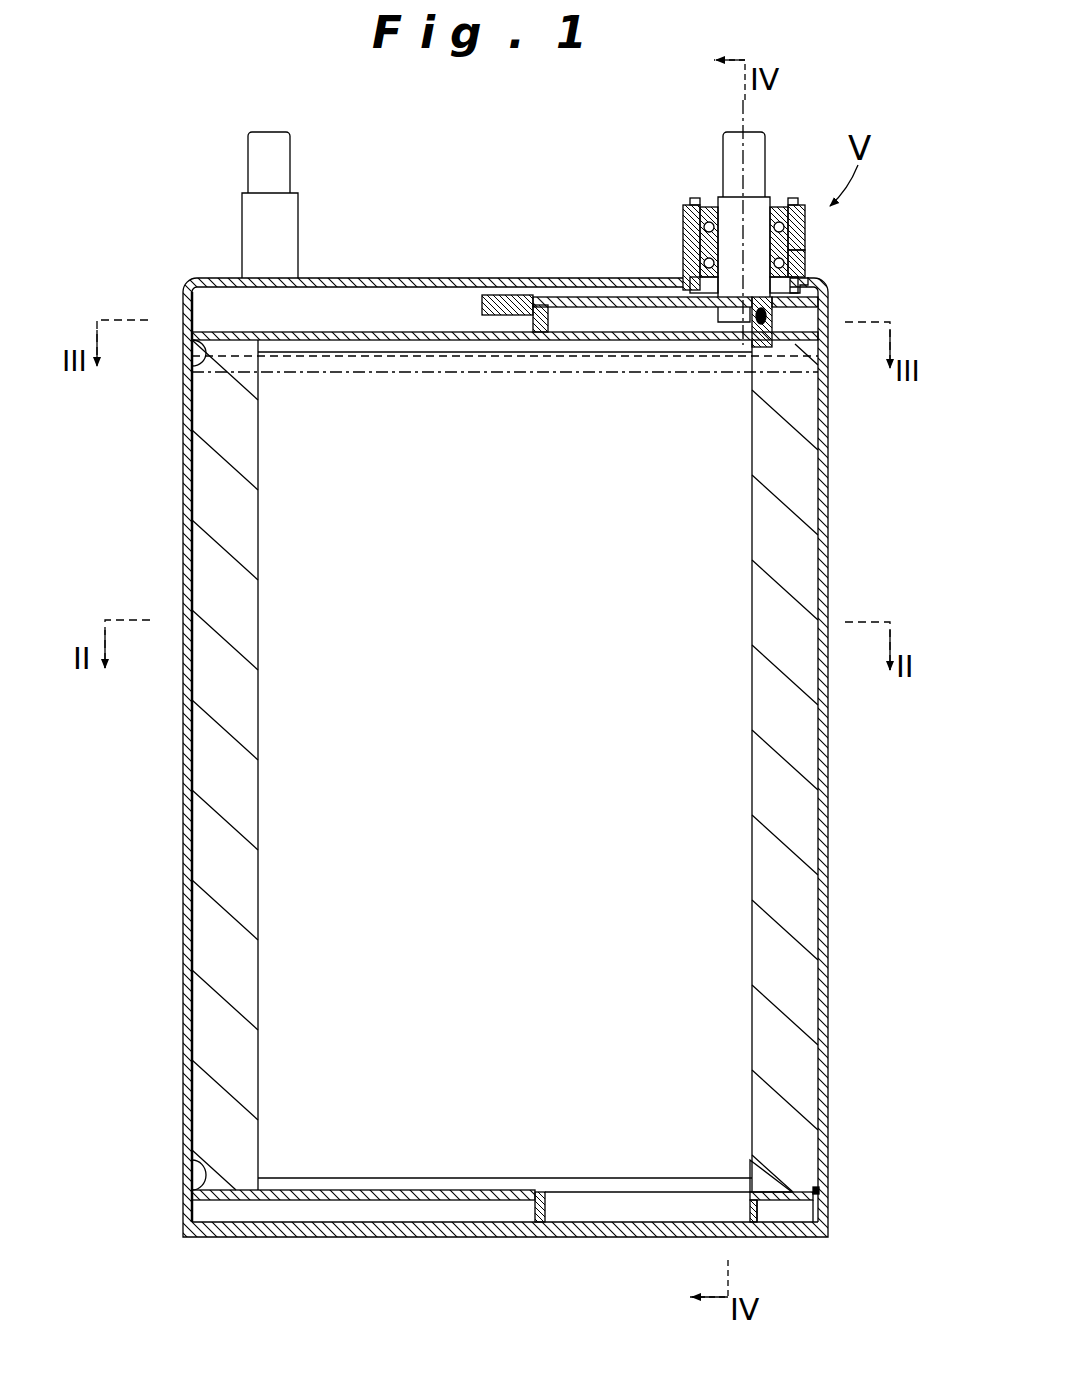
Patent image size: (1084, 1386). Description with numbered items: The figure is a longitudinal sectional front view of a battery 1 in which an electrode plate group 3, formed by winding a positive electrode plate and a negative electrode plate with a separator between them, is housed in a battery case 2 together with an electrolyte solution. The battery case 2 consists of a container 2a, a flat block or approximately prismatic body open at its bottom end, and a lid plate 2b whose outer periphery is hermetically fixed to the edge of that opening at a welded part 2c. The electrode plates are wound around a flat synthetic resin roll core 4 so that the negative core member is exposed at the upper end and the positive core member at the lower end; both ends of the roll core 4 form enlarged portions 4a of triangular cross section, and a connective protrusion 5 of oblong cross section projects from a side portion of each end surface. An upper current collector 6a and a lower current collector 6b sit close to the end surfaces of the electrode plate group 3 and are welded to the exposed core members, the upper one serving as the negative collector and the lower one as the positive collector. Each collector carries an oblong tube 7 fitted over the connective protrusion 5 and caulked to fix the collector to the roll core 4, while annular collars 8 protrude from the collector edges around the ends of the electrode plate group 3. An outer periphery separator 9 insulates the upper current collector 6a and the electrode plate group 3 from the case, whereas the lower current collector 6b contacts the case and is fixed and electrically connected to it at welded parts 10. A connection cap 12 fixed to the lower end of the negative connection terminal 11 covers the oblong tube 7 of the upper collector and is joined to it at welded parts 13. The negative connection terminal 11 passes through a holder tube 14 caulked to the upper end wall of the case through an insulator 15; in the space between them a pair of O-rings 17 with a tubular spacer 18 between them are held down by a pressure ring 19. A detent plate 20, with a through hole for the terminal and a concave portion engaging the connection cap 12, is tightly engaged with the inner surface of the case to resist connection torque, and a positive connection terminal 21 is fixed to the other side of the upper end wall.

The battery 1 is at (150, 266).
The battery case 2 is at (190, 540).
The container 2a is at (190, 566).
The lid plate 2b is at (437, 1230).
The welded part 2c is at (190, 1226).
The electrode plate group 3 is at (225, 715).
The roll core 4 is at (507, 736).
The enlarged portion 4a is at (545, 355).
The connective protrusion 5 is at (640, 322).
The upper current collector 6a is at (402, 332).
The lower current collector 6b is at (370, 1196).
The oblong tube 7 is at (543, 345).
The annular collar 8 is at (198, 350).
The outer periphery separator 9 is at (190, 905).
The welded part 10 is at (820, 1192).
The negative connection terminal 11 is at (745, 232).
The connection cap 12 is at (705, 310).
The welded part 13 is at (756, 324).
The holder tube 14 is at (806, 250).
The insulator 15 is at (810, 278).
The O-ring 17 is at (690, 252).
The tubular spacer 18 is at (806, 232).
The pressure ring 19 is at (695, 215).
The detent plate 20 is at (506, 415).
The positive connection terminal 21 is at (278, 228).